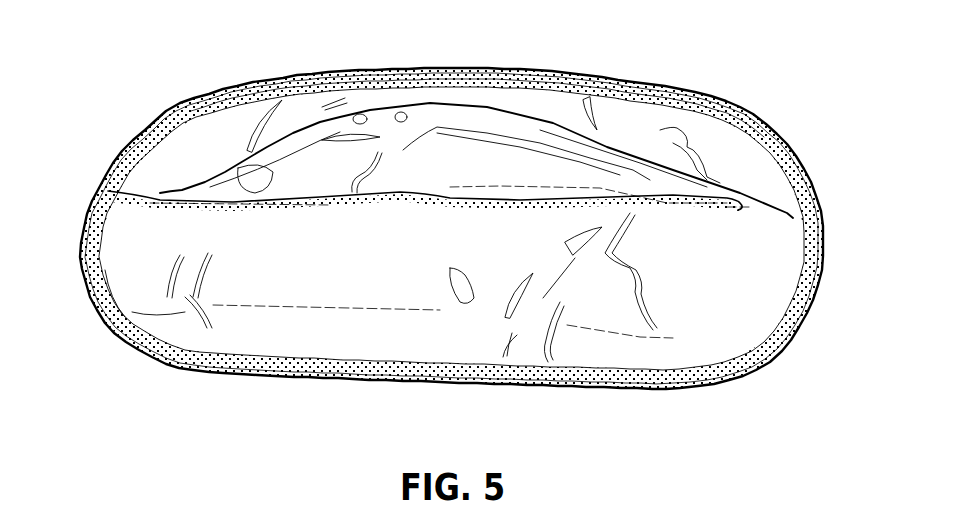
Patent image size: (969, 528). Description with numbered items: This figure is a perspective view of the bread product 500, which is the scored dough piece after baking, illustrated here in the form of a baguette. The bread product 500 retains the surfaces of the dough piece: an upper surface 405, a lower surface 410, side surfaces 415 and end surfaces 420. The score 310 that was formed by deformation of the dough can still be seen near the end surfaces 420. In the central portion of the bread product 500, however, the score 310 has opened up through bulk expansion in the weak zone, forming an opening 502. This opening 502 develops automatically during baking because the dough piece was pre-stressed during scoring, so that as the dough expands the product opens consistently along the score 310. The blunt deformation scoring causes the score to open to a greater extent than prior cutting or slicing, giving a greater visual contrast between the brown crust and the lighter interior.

The bread product 500 is at (159, 87).
The score 310 is at (158, 193).
The lower surface 410 is at (827, 247).
The side surfaces 415 is at (785, 138).
The end surfaces 420 is at (83, 223).
The opening 502 is at (427, 105).
The upper surface 405 is at (603, 103).